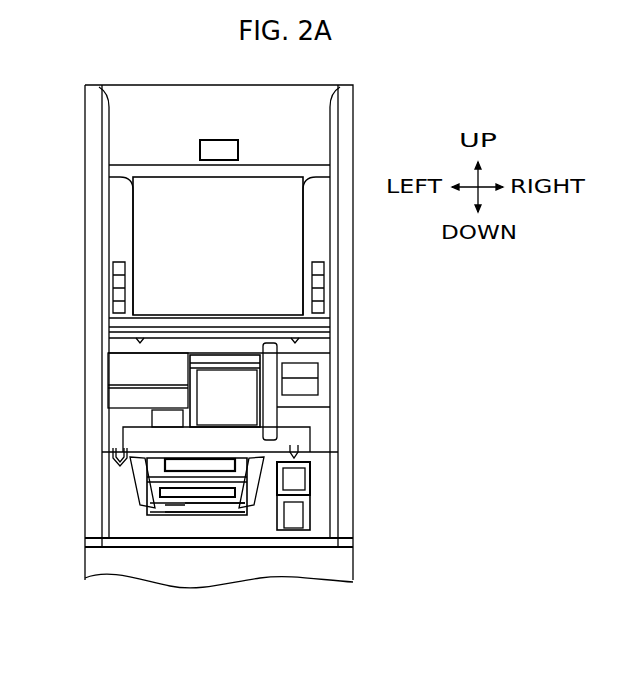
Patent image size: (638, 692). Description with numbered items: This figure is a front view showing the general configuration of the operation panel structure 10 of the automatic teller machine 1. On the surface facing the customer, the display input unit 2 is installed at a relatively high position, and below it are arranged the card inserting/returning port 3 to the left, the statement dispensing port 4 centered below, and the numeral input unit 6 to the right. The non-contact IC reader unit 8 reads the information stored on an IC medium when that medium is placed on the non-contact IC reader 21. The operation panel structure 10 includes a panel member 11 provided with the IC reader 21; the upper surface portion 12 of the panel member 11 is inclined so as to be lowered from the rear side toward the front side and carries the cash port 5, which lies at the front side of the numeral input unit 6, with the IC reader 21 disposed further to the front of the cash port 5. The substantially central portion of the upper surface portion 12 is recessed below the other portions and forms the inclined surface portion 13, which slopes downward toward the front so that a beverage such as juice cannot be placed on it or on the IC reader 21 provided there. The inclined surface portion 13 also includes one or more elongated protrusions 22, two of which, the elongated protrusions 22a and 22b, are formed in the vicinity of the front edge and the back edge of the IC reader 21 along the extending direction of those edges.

The automatic teller machine 1 is at (75, 138).
The display input unit 2 is at (183, 245).
The card inserting/returning port 3 is at (303, 378).
The statement dispensing port 4 is at (133, 395).
The cash port 5 is at (143, 488).
The numeral input unit 6 is at (225, 390).
The non-contact IC reader unit 8 is at (182, 515).
The operation panel structure 10 is at (110, 455).
The panel member 11 is at (322, 452).
The upper surface portion 12 is at (310, 481).
The inclined surface portion 13 is at (310, 497).
The non-contact IC reader 21 is at (148, 497).
The elongated protrusion 22 is at (285, 613).
The elongated protrusion 22a is at (200, 515).
The elongated protrusion 22b is at (242, 515).